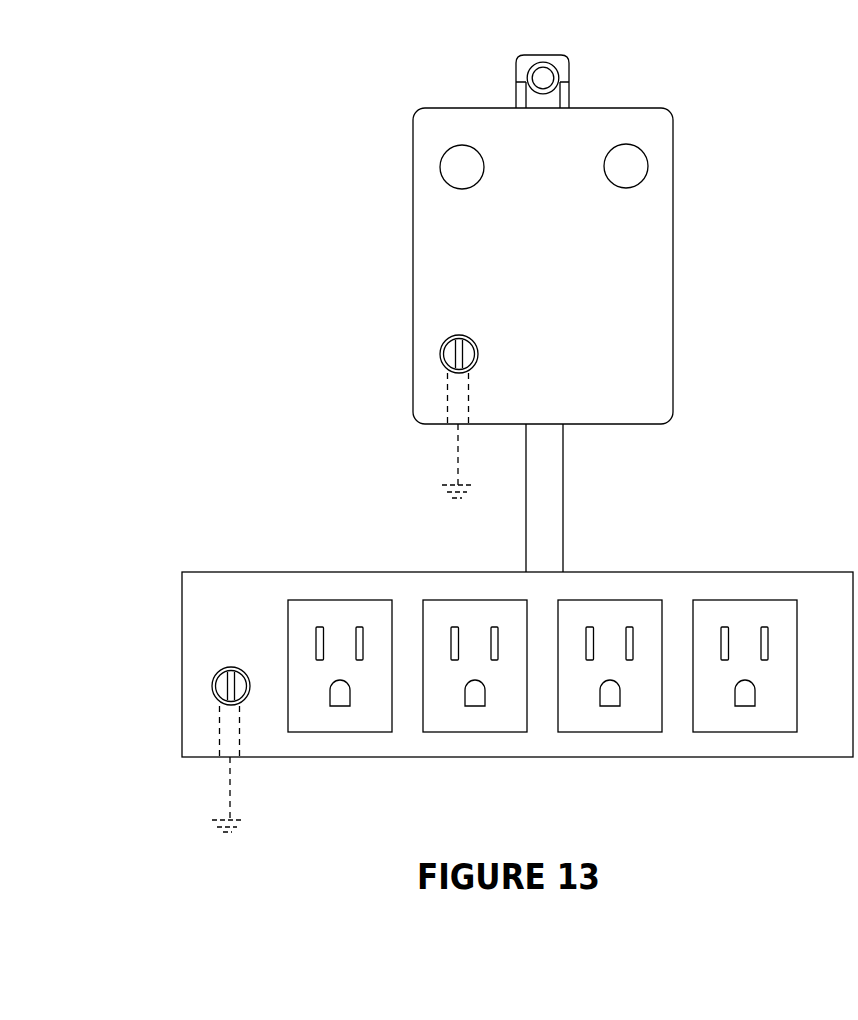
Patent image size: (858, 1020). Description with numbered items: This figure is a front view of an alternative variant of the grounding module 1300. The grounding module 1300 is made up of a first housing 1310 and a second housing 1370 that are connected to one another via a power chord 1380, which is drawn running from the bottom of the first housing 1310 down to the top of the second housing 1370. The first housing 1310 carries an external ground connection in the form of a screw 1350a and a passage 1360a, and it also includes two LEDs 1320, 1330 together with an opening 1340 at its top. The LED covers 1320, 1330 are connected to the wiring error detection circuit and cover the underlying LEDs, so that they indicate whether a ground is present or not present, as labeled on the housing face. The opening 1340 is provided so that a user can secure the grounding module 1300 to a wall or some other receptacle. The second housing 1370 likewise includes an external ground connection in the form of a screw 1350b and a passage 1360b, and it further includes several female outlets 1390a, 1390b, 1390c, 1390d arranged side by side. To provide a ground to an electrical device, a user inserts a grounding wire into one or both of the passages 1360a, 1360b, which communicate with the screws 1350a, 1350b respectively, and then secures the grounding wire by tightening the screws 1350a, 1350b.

The grounding module 1300 is at (215, 427).
The first housing 1310 is at (543, 266).
The LED 1320 is at (484, 160).
The LED 1330 is at (648, 158).
The opening 1340 is at (546, 70).
The screw 1350a is at (441, 352).
The screw 1350b is at (212, 685).
The passage 1360a is at (448, 402).
The passage 1360b is at (220, 733).
The second housing 1370 is at (517, 664).
The power chord 1380 is at (564, 518).
The female outlet 1390a is at (340, 666).
The female outlet 1390b is at (475, 666).
The female outlet 1390c is at (610, 666).
The female outlet 1390d is at (745, 666).